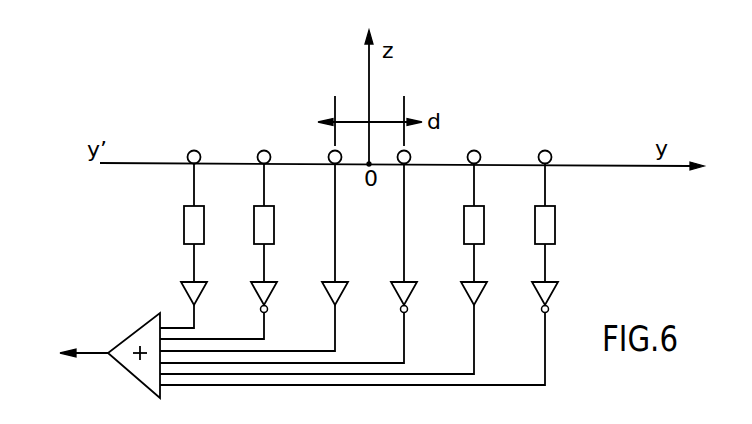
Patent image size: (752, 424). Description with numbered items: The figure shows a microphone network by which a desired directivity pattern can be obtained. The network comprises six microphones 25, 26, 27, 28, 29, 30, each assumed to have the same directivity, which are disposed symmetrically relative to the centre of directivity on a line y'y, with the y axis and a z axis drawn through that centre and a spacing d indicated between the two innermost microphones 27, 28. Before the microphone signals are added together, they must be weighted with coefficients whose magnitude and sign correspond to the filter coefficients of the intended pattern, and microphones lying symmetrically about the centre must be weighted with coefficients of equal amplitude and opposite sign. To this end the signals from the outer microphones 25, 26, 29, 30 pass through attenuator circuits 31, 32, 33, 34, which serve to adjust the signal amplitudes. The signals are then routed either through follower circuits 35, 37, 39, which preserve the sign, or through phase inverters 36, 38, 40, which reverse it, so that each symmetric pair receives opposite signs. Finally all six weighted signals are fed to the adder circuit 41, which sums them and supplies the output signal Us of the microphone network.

The microphone 25 is at (192, 151).
The microphone 26 is at (262, 151).
The microphone 27 is at (331, 170).
The microphone 28 is at (408, 170).
The microphone 29 is at (476, 151).
The microphone 30 is at (547, 151).
The attenuator circuit 31 is at (184, 222).
The attenuator circuit 32 is at (254, 222).
The attenuator circuit 33 is at (484, 222).
The attenuator circuit 34 is at (555, 222).
The follower circuit 35 is at (186, 280).
The phase inverter 36 is at (259, 280).
The follower circuit 37 is at (329, 280).
The phase inverter 38 is at (410, 281).
The follower circuit 39 is at (479, 281).
The phase inverter 40 is at (547, 281).
The adder circuit 41 is at (110, 355).